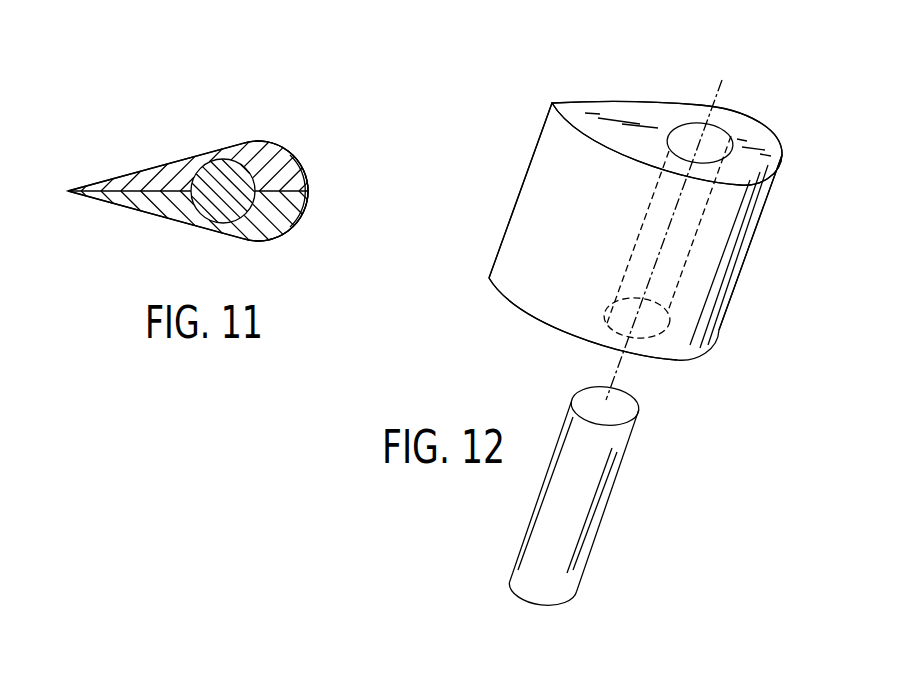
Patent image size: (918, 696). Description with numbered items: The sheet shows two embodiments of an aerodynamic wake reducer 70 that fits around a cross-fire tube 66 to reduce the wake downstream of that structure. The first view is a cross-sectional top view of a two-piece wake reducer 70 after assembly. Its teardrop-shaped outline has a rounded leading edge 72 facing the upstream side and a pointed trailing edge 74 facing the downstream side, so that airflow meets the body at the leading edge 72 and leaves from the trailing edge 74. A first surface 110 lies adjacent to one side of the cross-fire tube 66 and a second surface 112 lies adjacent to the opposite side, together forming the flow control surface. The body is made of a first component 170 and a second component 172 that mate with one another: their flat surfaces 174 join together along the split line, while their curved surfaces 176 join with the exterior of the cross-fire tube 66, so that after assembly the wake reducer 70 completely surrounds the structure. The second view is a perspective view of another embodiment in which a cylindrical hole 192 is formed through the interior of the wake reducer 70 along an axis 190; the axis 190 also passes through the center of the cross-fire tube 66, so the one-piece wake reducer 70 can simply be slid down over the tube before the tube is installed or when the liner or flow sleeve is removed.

In FIG. 11, the aerodynamic wake reducer 70 is at (298, 124).
In FIG. 12, the aerodynamic wake reducer 70 is at (762, 72).
In FIG. 11, the first surface 110 is at (244, 139).
In FIG. 12, the first surface 110 is at (600, 104).
In FIG. 11, the second surface 112 is at (170, 232).
In FIG. 12, the second surface 112 is at (568, 295).
In FIG. 11, the trailing edge 74 is at (66, 191).
In FIG. 12, the trailing edge 74 is at (520, 191).
In FIG. 11, the leading edge 72 is at (308, 190).
In FIG. 12, the leading edge 72 is at (747, 250).
In FIG. 11, the flat surfaces 174 is at (120, 173).
In FIG. 11, the curved surfaces 176 is at (191, 148).
In FIG. 11, the first component 170 is at (302, 167).
In FIG. 11, the second component 172 is at (284, 236).
In FIG. 11, the cross-fire tube 66 is at (221, 230).
In FIG. 12, the cross-fire tube 66 is at (587, 491).
In FIG. 12, the axis 190 is at (718, 90).
In FIG. 12, the cylindrical hole 192 is at (686, 136).